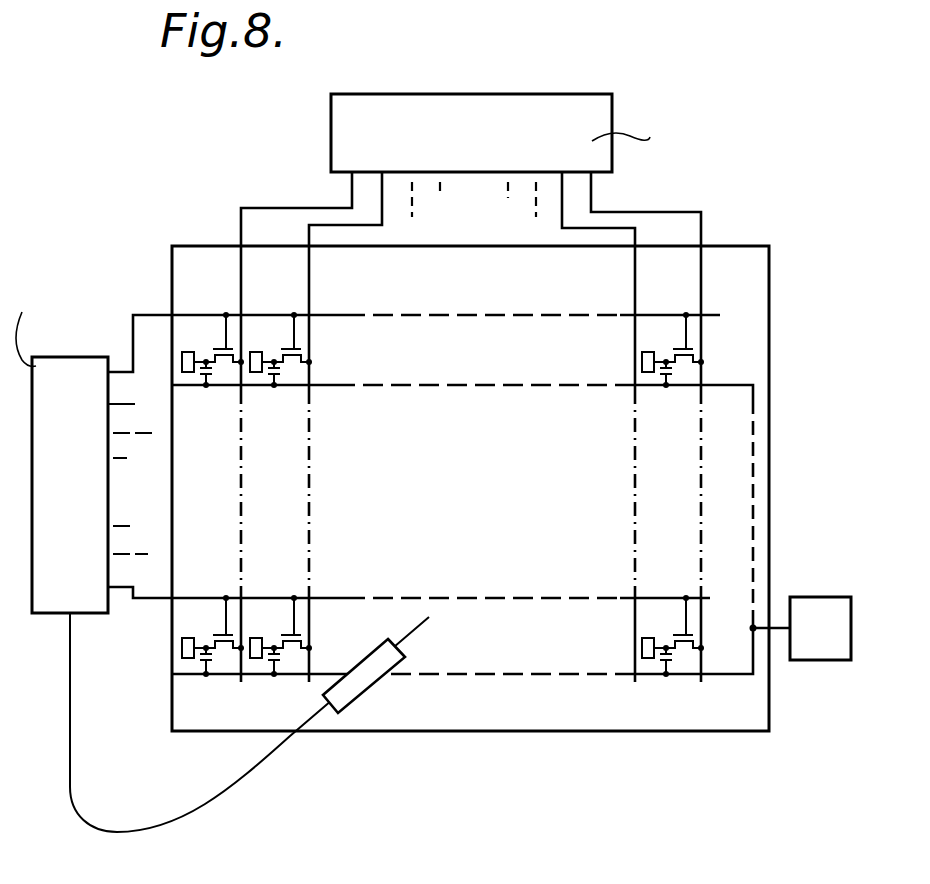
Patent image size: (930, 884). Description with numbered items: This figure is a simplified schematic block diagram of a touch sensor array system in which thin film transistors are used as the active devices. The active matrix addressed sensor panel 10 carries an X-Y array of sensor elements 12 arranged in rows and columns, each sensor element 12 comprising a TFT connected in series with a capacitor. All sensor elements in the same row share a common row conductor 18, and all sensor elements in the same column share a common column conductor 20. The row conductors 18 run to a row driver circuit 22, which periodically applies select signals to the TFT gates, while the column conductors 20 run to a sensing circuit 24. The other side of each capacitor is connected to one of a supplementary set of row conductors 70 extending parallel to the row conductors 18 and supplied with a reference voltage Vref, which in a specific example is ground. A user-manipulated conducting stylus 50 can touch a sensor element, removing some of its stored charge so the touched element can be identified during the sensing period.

The sensor panel 10 is at (772, 375).
The sensor element 12 is at (182, 340).
The row conductor 18 is at (325, 317).
The column conductor 20 is at (245, 265).
The row driver circuit 22 is at (82, 504).
The sensing circuit 24 is at (491, 147).
The conducting stylus 50 is at (390, 673).
The supplementary row conductor 70 is at (320, 387).